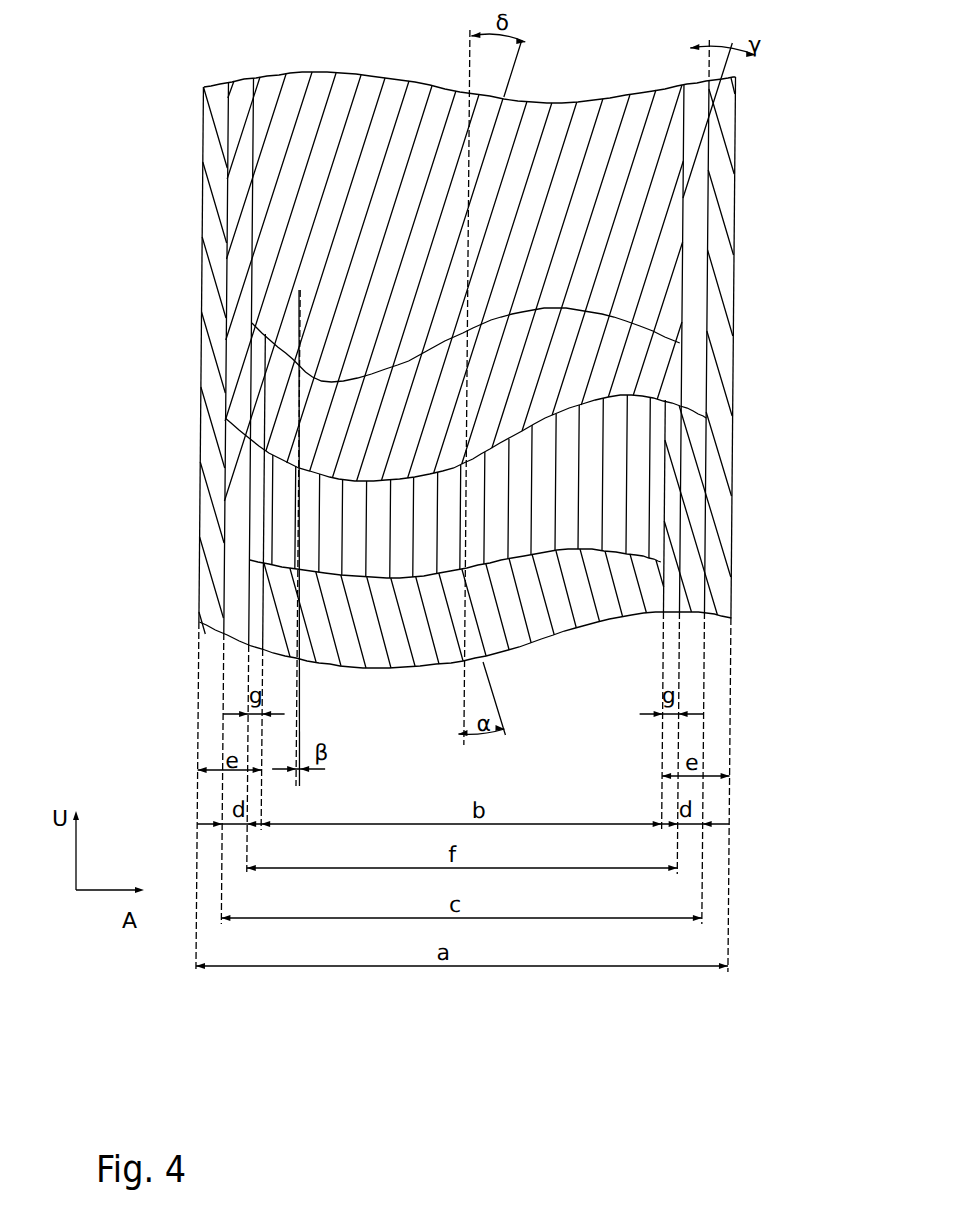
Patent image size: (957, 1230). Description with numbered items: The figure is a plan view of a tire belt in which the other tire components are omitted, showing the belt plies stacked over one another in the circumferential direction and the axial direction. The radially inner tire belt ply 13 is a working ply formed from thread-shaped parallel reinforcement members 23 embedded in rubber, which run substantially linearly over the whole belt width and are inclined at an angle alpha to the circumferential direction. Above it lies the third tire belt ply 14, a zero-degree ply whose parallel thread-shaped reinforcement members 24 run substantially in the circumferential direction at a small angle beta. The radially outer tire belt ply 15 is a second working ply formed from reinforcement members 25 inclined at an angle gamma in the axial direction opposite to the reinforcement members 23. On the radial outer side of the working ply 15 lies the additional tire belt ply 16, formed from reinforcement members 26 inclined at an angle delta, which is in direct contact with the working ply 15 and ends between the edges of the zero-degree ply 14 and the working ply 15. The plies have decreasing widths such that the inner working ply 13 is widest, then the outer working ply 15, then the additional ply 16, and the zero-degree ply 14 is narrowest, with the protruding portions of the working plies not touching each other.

The radially inner tire belt ply 13 is at (722, 332).
The third tire belt ply 14 is at (644, 518).
The radially outer tire belt ply 15 is at (697, 303).
The additional tire belt ply 16 is at (637, 200).
The reinforcement members 23 is at (240, 553).
The lower band region 24 is at (328, 520).
The reinforcement members 25 is at (258, 298).
The reinforcement members 26 is at (313, 163).